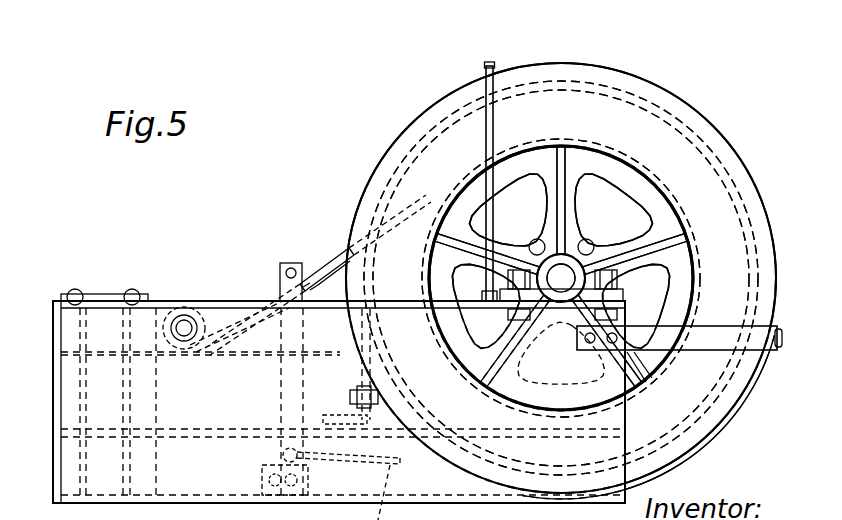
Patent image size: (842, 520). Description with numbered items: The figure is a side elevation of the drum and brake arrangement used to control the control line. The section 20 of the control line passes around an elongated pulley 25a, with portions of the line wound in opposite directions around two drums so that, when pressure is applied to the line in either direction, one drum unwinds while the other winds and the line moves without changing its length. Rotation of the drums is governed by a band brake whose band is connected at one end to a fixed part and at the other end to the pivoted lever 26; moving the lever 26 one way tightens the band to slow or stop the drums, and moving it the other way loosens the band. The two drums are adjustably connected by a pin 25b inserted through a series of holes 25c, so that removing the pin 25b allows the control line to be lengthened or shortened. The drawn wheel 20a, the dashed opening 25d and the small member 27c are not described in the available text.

The section of the control line 20 is at (50, 432).
The wheel 20a is at (580, 83).
The elongated pulley 25a is at (148, 383).
The pin 25b is at (588, 241).
The holes 25c is at (537, 241).
The wheel opening 25d is at (561, 353).
The pivoted lever 26 is at (289, 262).
The adjusting member 27c is at (360, 389).